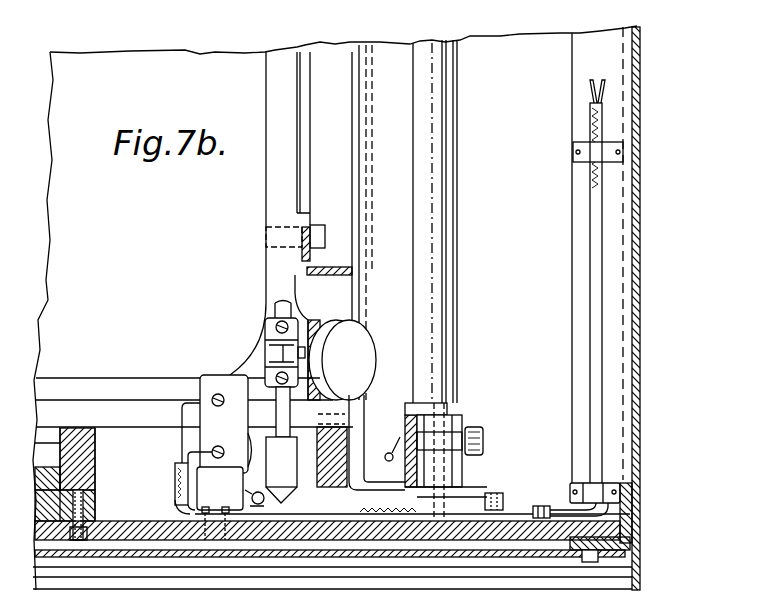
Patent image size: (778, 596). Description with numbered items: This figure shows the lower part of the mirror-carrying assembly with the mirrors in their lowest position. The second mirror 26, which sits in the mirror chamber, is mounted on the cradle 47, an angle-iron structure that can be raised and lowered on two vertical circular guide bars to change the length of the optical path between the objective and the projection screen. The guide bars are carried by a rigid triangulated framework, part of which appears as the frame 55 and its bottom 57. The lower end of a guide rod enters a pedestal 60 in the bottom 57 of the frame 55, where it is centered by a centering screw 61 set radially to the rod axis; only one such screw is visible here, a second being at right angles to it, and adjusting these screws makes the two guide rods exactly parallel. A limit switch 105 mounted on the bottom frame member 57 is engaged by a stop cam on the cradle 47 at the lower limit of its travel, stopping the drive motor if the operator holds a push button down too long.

The second mirror 26 is at (94, 0).
The cradle 47 is at (123, 385).
The limit switch 105 is at (227, 413).
The centering screw 61 is at (477, 428).
The pedestal 60 is at (450, 487).
The bottom of the frame 57 is at (533, 550).
The frame 55 is at (638, 163).